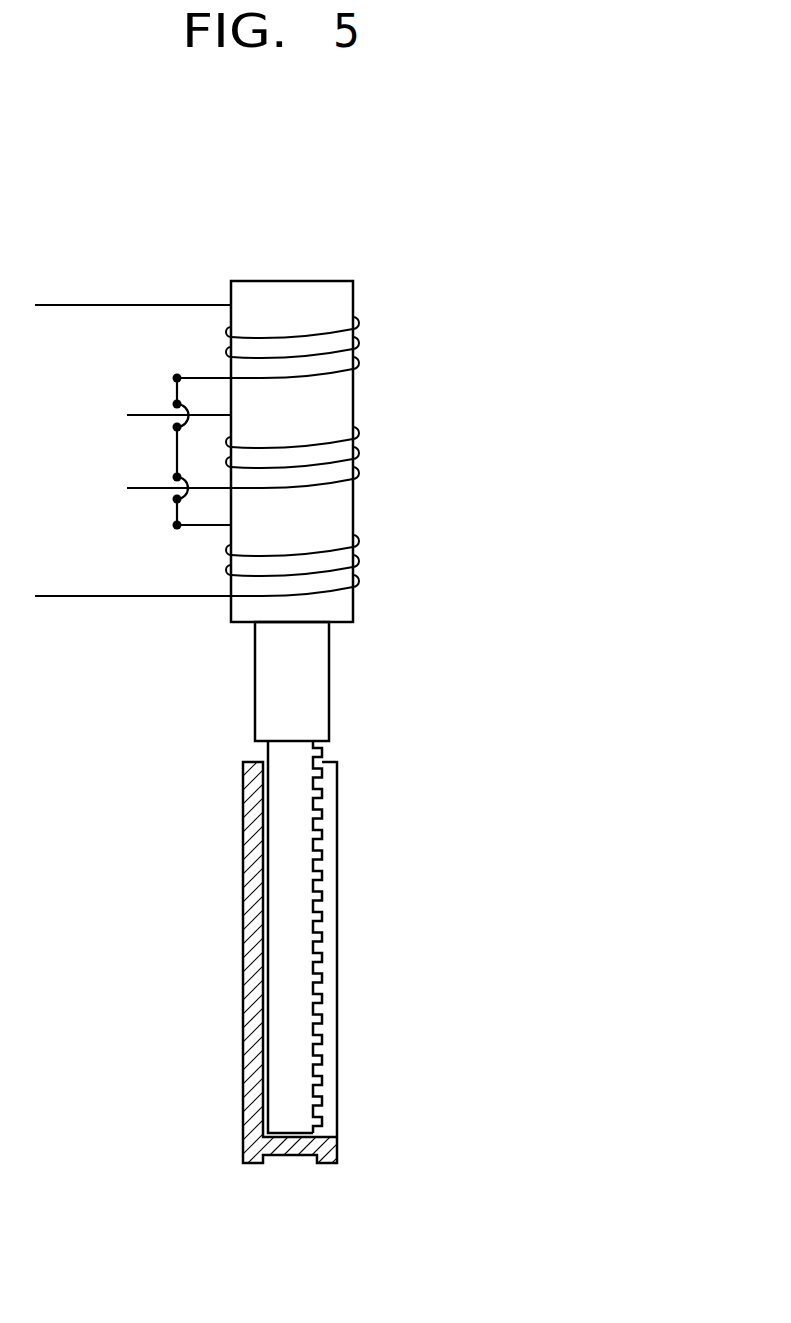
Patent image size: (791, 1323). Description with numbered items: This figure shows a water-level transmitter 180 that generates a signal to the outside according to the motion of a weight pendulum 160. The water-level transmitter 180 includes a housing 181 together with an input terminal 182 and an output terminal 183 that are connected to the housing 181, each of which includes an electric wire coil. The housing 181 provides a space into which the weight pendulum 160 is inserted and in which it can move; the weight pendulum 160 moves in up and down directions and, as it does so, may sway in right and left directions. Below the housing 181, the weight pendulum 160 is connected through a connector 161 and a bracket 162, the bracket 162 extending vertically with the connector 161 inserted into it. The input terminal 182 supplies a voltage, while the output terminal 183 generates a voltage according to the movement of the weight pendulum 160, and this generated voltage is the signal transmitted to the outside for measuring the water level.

The water-level transmitter 180 is at (231, 279).
The housing 181 is at (353, 294).
The input terminal 182 is at (360, 453).
The output terminal 183 is at (360, 343).
The weight pendulum 160 is at (330, 682).
The connector 161 is at (300, 907).
The bracket 162 is at (243, 873).